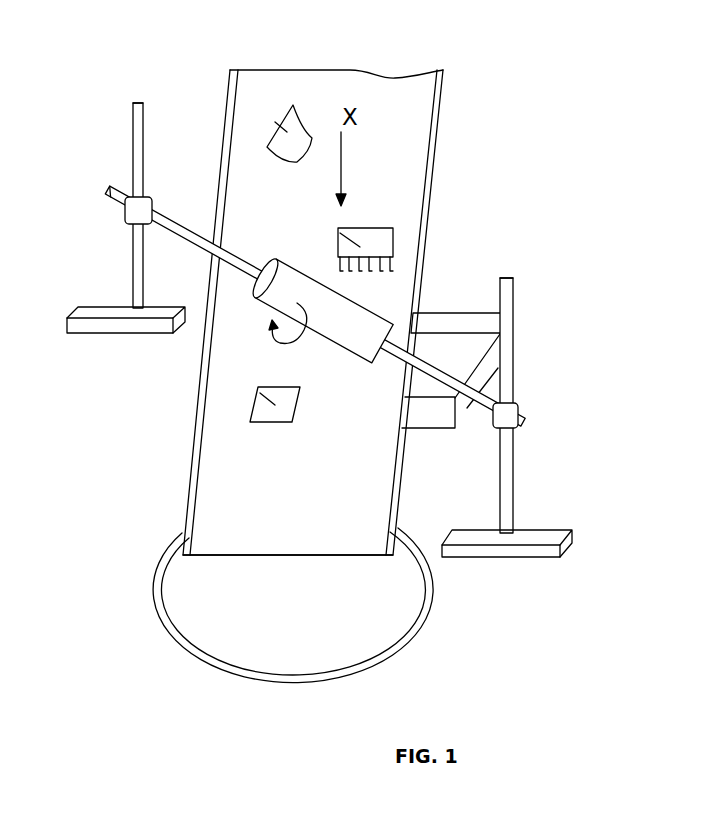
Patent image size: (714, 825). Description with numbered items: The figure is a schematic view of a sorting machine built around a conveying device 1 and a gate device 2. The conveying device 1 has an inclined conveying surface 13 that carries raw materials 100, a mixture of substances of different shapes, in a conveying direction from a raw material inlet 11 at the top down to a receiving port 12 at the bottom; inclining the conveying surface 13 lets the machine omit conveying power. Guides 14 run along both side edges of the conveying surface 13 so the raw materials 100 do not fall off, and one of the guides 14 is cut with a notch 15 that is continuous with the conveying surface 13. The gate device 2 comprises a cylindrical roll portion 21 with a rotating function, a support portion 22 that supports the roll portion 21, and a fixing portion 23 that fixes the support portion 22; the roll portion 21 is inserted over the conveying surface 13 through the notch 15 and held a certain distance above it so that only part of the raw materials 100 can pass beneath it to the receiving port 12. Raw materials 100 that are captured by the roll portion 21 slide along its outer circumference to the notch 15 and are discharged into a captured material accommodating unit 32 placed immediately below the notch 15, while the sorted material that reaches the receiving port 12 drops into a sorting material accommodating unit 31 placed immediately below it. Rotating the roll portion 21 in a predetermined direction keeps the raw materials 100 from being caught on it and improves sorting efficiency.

The conveying device 1 is at (447, 106).
The raw material inlet 11 is at (338, 70).
The receiving port 12 is at (280, 557).
The conveying surface 13 is at (392, 185).
The guide 14 is at (423, 223).
The notch 15 is at (405, 380).
The raw materials 100 is at (287, 132).
The gate device 2 is at (329, 309).
The roll portion 21 is at (335, 327).
The support portion 22 is at (112, 190).
The fixing portion 23 is at (137, 105).
The sorting material accommodating unit 31 is at (417, 633).
The captured material accommodating unit 32 is at (447, 315).